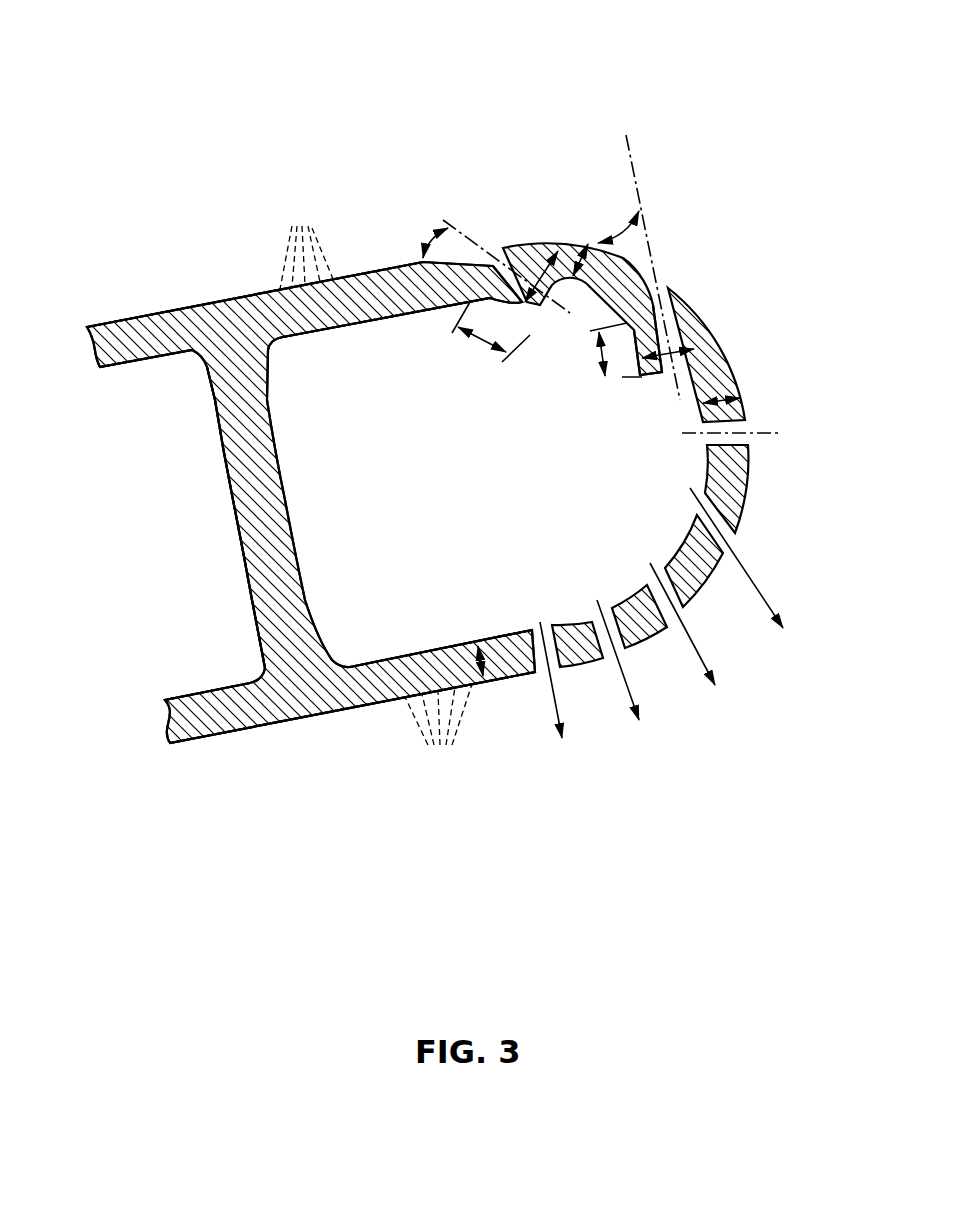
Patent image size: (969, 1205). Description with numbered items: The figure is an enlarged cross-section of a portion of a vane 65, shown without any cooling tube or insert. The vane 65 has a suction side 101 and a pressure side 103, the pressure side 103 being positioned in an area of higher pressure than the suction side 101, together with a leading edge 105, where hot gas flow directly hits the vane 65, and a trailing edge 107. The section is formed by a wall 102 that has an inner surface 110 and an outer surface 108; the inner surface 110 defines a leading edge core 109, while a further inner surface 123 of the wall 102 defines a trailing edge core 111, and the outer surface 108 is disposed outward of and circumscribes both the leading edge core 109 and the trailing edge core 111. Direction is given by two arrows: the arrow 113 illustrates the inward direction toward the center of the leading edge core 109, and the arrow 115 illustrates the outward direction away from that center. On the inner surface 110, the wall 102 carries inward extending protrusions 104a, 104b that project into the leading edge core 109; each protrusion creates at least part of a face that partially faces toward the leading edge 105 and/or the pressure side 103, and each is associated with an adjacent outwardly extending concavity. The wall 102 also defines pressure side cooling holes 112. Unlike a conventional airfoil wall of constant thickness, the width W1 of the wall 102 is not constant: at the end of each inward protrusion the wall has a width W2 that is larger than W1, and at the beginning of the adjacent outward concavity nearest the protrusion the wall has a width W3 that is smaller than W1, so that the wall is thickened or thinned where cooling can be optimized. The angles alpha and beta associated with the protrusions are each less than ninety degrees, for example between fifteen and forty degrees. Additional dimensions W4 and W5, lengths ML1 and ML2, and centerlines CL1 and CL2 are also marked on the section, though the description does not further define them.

The vane 65 is at (225, 124).
The suction side 101 is at (306, 245).
The wall 102 is at (222, 318).
The pressure side 103 is at (438, 728).
The inward protrusion 104a is at (607, 367).
The inward protrusion 104b is at (532, 313).
The leading edge 105 is at (738, 365).
The trailing edge 107 is at (52, 540).
The outer surface 108 is at (253, 292).
The leading edge core 109 is at (356, 645).
The inner surface 110 is at (293, 335).
The trailing edge core 111 is at (203, 640).
The pressure side cooling holes 112 is at (705, 660).
The arrow 113 is at (683, 443).
The arrow 115 is at (608, 546).
The inner surface 123 is at (148, 364).
The width of wall W1 is at (490, 668).
The width of wall at end of inward protrusion W2 is at (744, 405).
The width of wall at beginning of outward concavity W3 is at (579, 258).
The lip leg width W4 is at (694, 350).
The lip segment width W5 is at (533, 247).
The first leg length ML1 is at (597, 355).
The second leg length ML2 is at (481, 341).
The first centerline CL1 is at (632, 170).
The second centerline CL2 is at (468, 237).